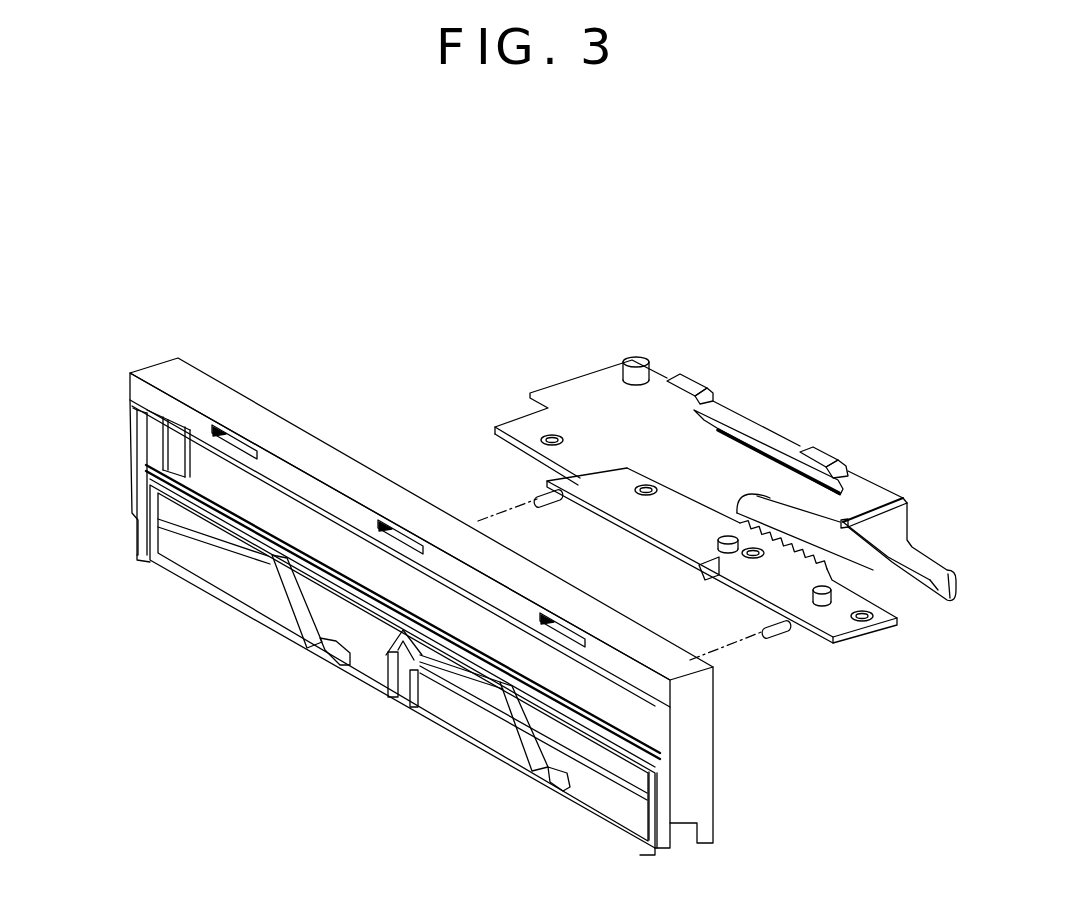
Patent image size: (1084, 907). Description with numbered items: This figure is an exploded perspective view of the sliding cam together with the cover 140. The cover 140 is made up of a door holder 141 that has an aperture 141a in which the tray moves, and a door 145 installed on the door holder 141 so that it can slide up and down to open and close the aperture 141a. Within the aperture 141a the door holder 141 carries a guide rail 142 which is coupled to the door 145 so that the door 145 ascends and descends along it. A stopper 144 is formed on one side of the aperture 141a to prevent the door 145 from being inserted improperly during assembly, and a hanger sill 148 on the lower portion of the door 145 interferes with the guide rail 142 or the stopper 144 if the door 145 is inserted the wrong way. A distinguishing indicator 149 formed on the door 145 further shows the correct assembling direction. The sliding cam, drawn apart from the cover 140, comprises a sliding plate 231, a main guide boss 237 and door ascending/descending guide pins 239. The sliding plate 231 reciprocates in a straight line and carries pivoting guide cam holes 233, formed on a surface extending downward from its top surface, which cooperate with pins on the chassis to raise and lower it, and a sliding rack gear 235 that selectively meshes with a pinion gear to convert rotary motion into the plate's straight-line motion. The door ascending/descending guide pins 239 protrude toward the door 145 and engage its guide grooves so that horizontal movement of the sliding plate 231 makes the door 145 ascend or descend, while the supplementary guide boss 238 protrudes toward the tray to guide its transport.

The cover 140 is at (127, 351).
The door holder 141 is at (697, 764).
The aperture 141a is at (457, 604).
The guide rail 142 is at (150, 437).
The stopper 144 is at (655, 812).
The door 145 is at (220, 597).
The hanger sill 148 is at (146, 556).
The distinguishing indicator 149 is at (395, 700).
The sliding plate 231 is at (580, 392).
The pivoting guide cam holes 233 is at (920, 588).
The sliding rack gear 235 is at (787, 553).
The main guide boss 237 is at (640, 356).
The supplementary guide boss 238 is at (821, 607).
The door ascending/descending guide pins 239 is at (536, 498).